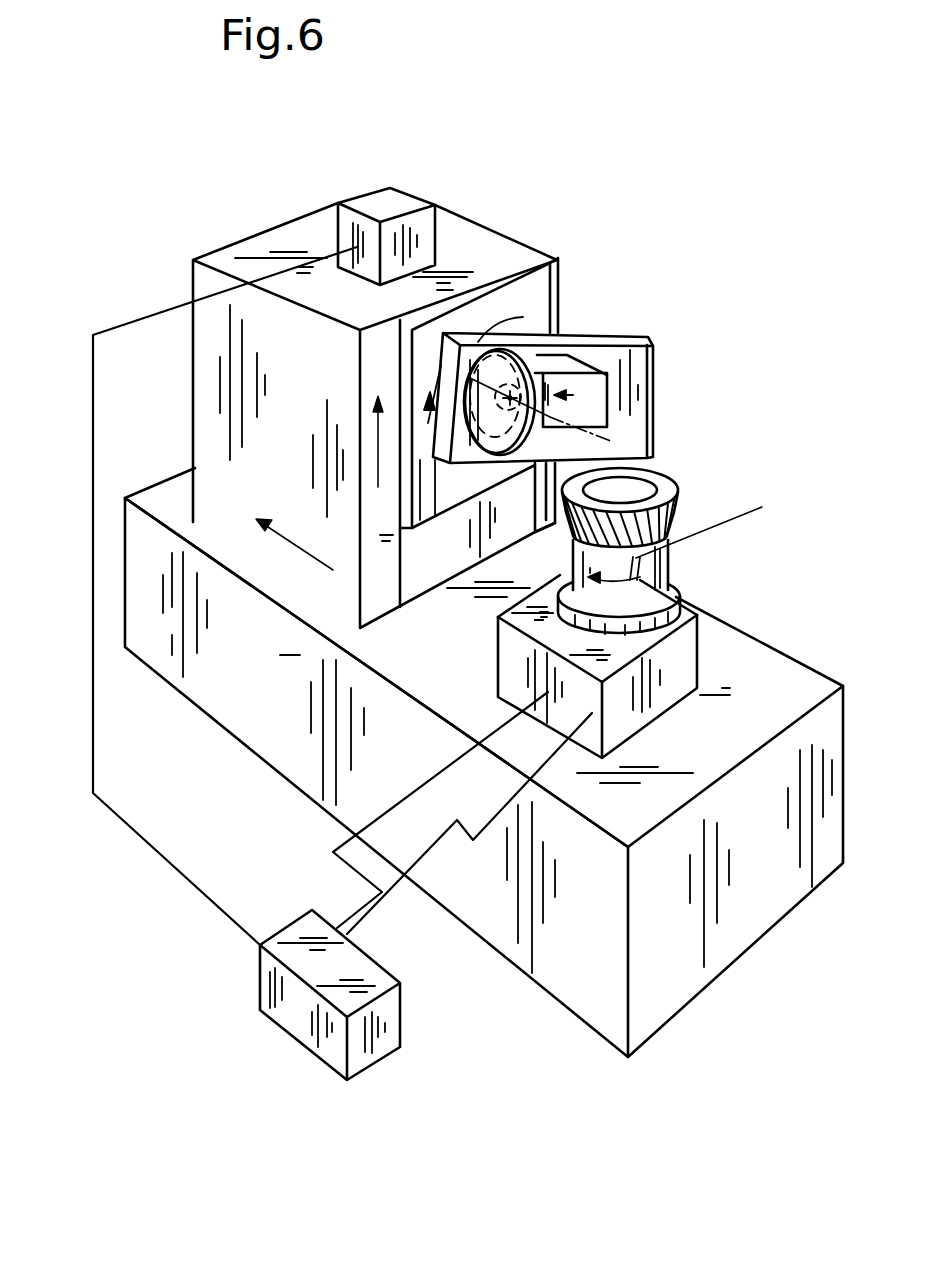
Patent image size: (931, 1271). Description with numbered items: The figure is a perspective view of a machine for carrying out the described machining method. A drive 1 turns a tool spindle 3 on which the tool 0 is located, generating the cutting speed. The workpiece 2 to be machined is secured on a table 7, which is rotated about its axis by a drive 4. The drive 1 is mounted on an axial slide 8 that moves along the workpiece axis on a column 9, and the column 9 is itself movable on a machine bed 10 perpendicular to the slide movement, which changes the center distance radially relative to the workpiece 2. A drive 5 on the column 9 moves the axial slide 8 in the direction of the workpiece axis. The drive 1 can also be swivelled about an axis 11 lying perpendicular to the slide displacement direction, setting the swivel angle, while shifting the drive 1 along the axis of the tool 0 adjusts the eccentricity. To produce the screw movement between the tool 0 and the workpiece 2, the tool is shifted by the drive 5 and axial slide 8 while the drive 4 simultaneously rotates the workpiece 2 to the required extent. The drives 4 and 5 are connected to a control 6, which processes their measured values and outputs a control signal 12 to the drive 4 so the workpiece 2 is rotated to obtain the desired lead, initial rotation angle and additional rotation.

The tool 0 is at (468, 400).
The drive 1 is at (572, 362).
The workpiece 2 is at (665, 490).
The tool spindle 3 is at (600, 330).
The drive 4 is at (675, 643).
The drive 5 is at (393, 205).
The control 6 is at (350, 990).
The table 7 is at (643, 588).
The axial slide 8 is at (550, 297).
The column 9 is at (235, 353).
The machine bed 10 is at (188, 667).
The axis 11 is at (605, 438).
The control signal 12 is at (395, 898).